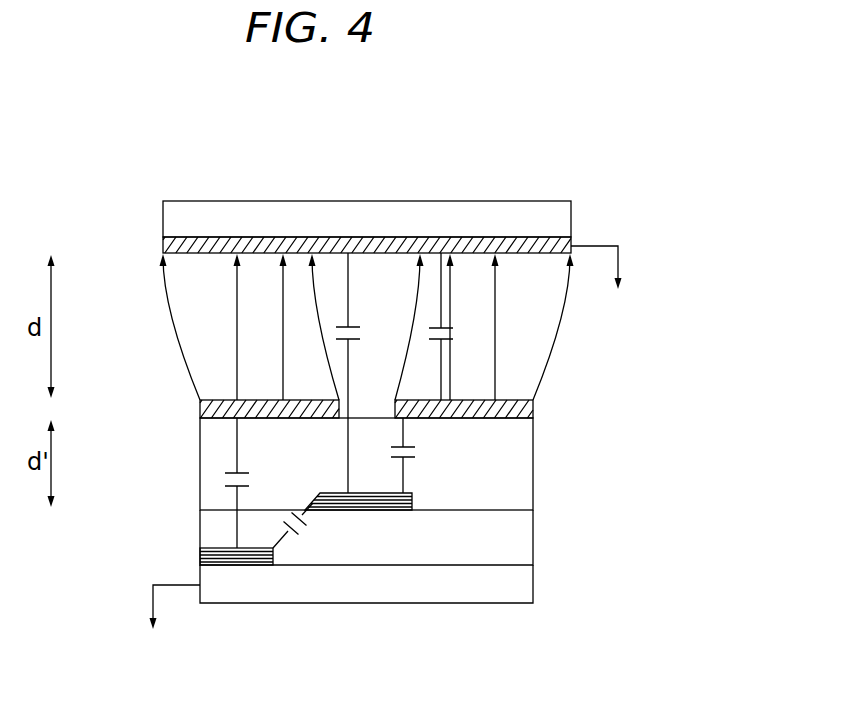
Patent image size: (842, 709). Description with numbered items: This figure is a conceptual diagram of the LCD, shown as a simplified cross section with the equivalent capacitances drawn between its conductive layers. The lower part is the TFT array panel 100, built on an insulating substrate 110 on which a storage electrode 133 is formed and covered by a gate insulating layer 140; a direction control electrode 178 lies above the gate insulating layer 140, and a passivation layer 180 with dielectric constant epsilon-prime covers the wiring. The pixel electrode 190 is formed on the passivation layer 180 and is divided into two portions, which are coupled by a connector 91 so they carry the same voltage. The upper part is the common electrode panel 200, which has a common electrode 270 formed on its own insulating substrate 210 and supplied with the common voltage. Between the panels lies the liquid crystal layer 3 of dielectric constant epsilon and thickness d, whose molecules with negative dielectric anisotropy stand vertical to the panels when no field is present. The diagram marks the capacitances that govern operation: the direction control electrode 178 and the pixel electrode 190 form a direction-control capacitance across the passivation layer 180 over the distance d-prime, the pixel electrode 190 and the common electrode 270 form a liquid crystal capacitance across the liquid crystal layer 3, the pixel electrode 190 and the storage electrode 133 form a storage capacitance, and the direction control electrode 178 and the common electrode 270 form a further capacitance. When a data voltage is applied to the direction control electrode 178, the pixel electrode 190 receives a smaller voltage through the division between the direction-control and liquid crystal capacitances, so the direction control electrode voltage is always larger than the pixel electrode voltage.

The common electrode panel 200 is at (416, 240).
The insulating substrate 210 is at (323, 210).
The common electrode 270 is at (430, 240).
The liquid crystal layer 3 is at (152, 334).
The pixel electrode 190 is at (200, 405).
The connector 91 is at (378, 386).
The TFT array panel 100 is at (397, 547).
The insulating substrate 110 is at (283, 597).
The storage electrode 133 is at (226, 566).
The gate insulating layer 140 is at (415, 548).
The direction control electrode 178 is at (358, 511).
The passivation layer 180 is at (486, 475).